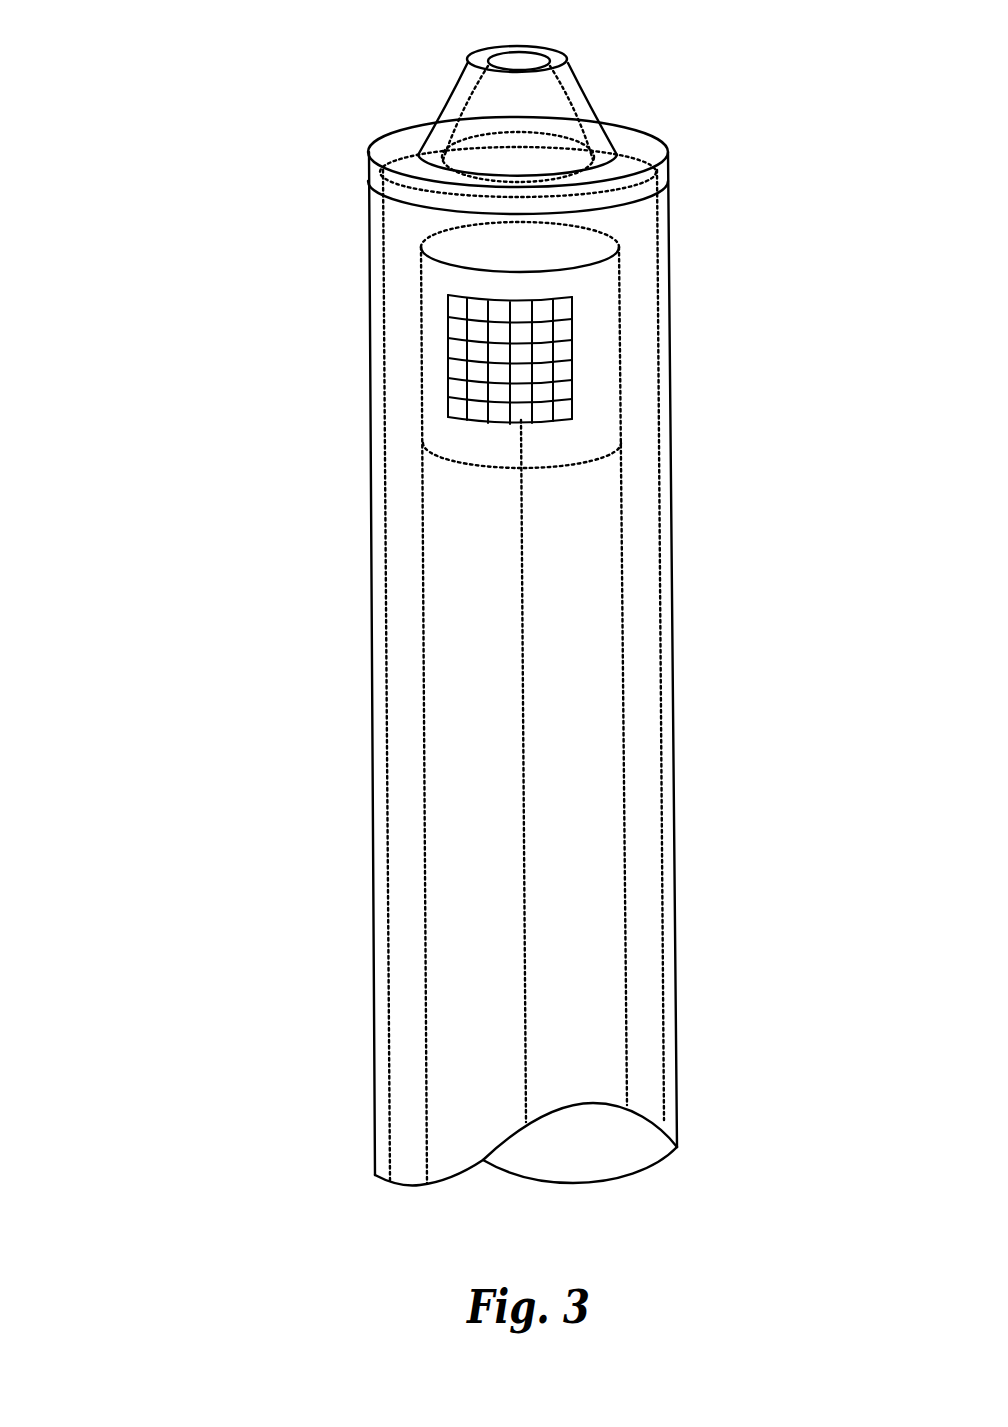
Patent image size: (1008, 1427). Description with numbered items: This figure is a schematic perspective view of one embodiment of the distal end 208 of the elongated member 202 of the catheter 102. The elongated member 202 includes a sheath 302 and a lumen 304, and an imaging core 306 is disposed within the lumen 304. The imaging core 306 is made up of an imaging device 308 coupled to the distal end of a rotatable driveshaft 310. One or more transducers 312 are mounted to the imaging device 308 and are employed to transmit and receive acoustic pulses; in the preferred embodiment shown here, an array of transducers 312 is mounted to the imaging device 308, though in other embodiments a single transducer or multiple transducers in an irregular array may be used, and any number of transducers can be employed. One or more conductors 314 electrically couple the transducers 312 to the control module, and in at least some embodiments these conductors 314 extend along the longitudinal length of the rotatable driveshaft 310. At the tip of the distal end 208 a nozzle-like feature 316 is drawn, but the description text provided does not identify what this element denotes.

The catheter 102 is at (122, 147).
The elongated member 202 is at (273, 245).
The distal end 208 is at (197, 560).
The sheath 302 is at (667, 855).
The lumen 304 is at (408, 797).
The imaging core 306 is at (635, 617).
The imaging device 308 is at (440, 427).
The rotatable driveshaft 310 is at (450, 640).
The transducers 312 is at (583, 358).
The conductors 314 is at (525, 968).
The nozzle 316 is at (572, 97).